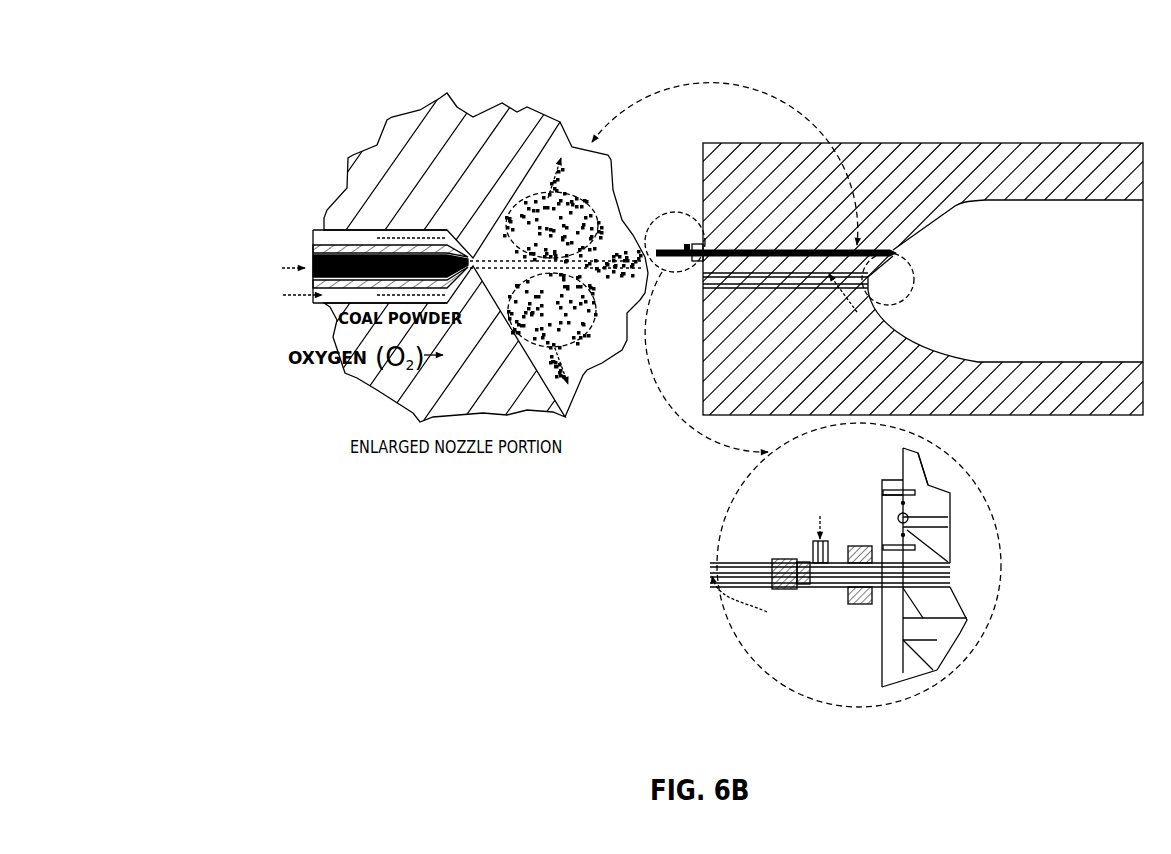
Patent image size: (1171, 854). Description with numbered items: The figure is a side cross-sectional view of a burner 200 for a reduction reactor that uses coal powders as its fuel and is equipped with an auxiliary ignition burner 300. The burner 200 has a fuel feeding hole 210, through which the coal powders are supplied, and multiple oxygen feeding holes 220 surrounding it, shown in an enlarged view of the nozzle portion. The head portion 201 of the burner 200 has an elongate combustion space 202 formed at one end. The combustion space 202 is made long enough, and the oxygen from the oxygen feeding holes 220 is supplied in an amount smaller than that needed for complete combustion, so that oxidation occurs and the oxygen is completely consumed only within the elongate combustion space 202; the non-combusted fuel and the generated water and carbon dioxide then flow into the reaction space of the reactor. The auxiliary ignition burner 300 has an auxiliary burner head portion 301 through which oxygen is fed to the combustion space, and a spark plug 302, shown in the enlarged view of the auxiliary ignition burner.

The burner 200 is at (1076, 140).
The head portion 201 is at (978, 381).
The elongate combustion space 202 is at (1068, 334).
The fuel feeding hole 210 is at (304, 257).
The oxygen feeding holes 220 is at (324, 238).
The auxiliary ignition burner 300 is at (684, 228).
The auxiliary burner head portion 301 is at (905, 252).
The spark plug 302 is at (700, 563).